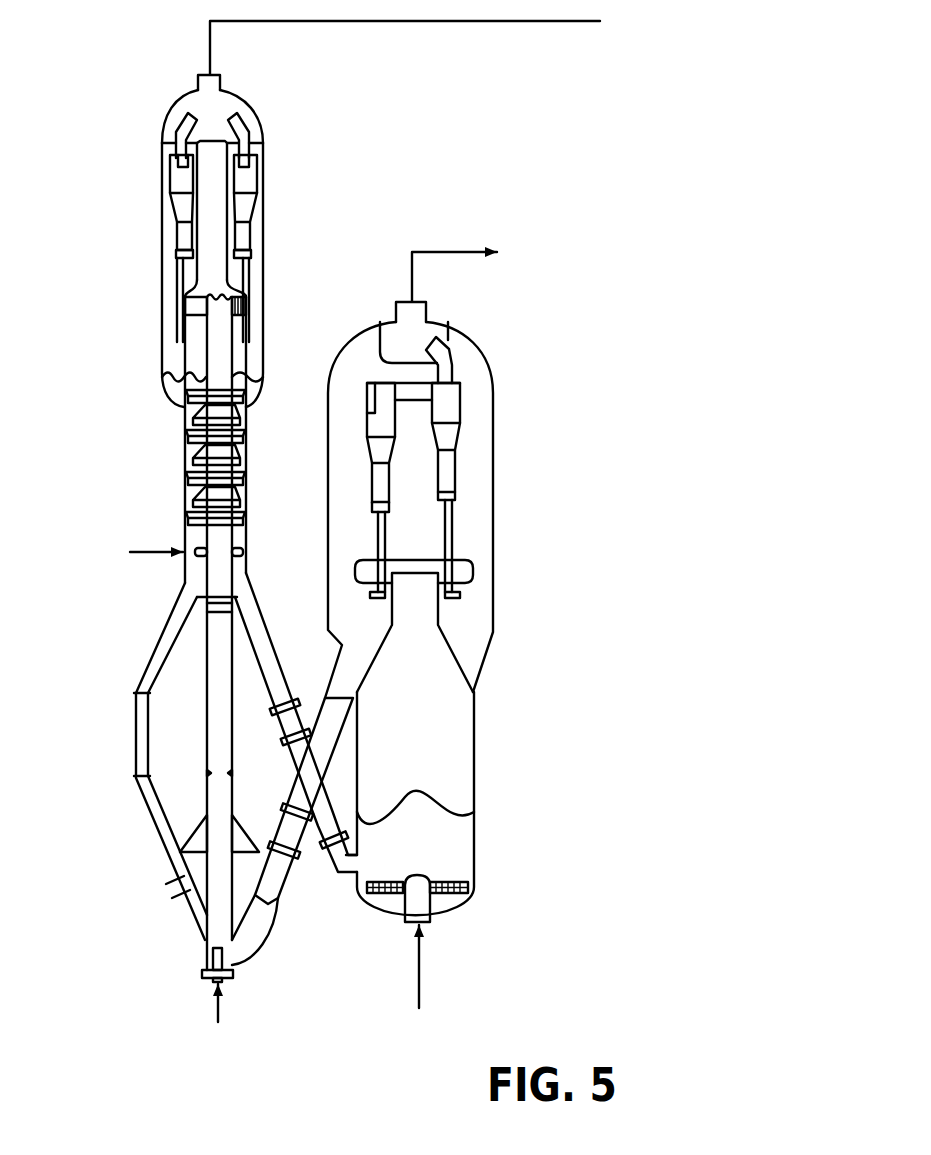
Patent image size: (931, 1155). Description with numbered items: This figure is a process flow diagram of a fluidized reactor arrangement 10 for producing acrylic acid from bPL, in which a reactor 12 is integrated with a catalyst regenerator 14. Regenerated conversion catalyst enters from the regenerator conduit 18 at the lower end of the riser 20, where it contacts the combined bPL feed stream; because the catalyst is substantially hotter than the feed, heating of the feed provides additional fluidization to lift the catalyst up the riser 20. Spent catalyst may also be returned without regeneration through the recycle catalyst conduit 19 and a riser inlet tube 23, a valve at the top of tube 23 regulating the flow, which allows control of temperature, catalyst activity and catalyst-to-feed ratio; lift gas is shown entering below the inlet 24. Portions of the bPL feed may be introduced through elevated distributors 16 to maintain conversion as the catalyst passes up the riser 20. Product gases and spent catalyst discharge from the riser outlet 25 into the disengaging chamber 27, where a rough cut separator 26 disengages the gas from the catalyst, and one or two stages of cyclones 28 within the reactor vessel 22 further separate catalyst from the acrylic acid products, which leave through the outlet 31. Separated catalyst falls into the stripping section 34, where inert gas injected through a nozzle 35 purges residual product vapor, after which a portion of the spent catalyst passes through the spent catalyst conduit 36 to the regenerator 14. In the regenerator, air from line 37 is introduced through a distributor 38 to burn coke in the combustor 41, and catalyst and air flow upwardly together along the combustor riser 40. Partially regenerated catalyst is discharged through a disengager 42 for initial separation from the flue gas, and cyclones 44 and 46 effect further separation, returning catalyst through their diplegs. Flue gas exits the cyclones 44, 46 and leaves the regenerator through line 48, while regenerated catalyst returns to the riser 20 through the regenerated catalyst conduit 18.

The fluidized reactor arrangement 10 is at (447, 122).
The reactor 12 is at (267, 123).
The catalyst regenerator 14 is at (510, 337).
The elevated distributors 16 is at (207, 821).
The regenerator conduit 18 is at (290, 860).
The recycle catalyst conduit 19 is at (162, 667).
The riser 20 is at (233, 695).
The reactor vessel 22 is at (246, 308).
The riser inlet tube 23 is at (188, 910).
The lift gas inlet 24 is at (218, 1015).
The riser outlet 25 is at (266, 320).
The rough cut separator 26 is at (233, 320).
The disengaging chamber 27 is at (193, 355).
The cyclones 28 is at (248, 182).
The outlet 31 is at (219, 82).
The stripping section 34 is at (185, 483).
The nozzle 35 is at (184, 558).
The spent catalyst conduit 36 is at (264, 627).
The line 37 is at (420, 992).
The distributor 38 is at (461, 878).
The combustor riser 40 is at (439, 612).
The combustor 41 is at (452, 732).
The disengager 42 is at (474, 572).
The cyclone 44 is at (367, 430).
The cyclone 46 is at (462, 430).
The line 48 is at (453, 252).